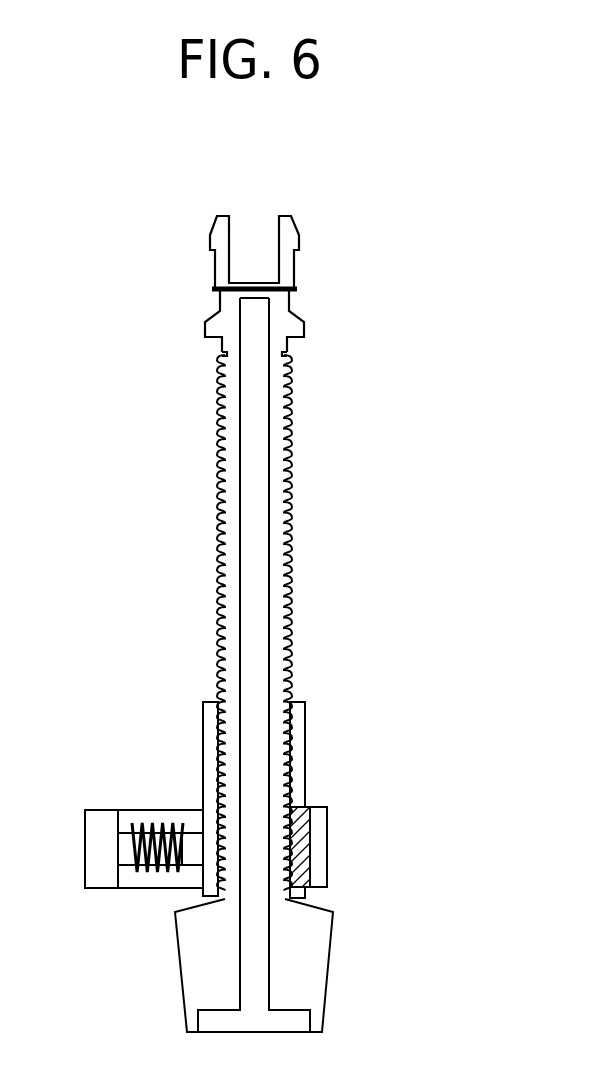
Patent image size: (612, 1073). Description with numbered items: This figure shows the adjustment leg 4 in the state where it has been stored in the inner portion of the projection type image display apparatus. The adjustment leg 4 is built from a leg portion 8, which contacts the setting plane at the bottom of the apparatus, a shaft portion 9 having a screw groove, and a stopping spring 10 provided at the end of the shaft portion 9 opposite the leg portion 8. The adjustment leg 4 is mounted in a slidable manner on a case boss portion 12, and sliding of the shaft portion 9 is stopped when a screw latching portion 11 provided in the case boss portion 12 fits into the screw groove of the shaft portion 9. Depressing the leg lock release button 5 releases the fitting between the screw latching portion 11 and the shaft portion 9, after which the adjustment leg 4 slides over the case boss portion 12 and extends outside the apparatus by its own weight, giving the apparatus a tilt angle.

The adjustment leg 4 is at (103, 214).
The leg lock release button 5 is at (103, 810).
The leg portion 8 is at (308, 965).
The shaft portion 9 is at (293, 460).
The stopping spring 10 is at (305, 325).
The screw latching portion 11 is at (312, 842).
The case boss portion 12 is at (307, 742).